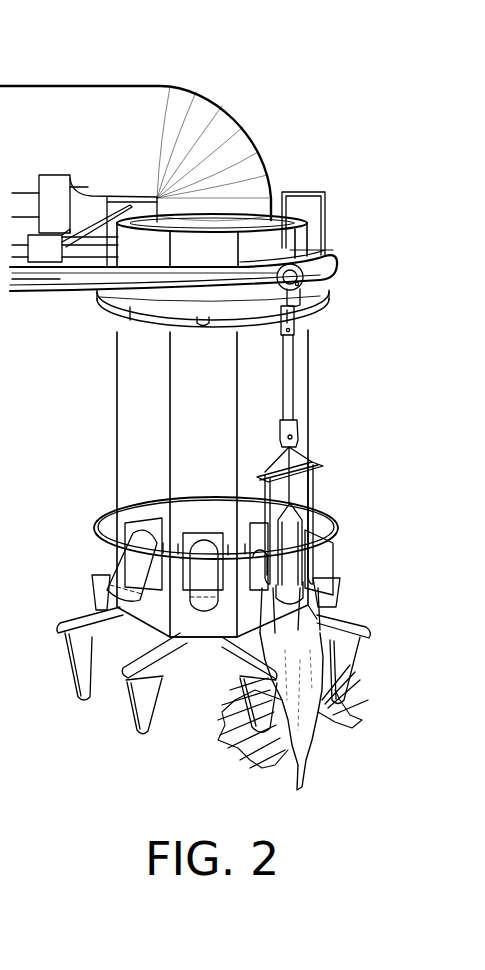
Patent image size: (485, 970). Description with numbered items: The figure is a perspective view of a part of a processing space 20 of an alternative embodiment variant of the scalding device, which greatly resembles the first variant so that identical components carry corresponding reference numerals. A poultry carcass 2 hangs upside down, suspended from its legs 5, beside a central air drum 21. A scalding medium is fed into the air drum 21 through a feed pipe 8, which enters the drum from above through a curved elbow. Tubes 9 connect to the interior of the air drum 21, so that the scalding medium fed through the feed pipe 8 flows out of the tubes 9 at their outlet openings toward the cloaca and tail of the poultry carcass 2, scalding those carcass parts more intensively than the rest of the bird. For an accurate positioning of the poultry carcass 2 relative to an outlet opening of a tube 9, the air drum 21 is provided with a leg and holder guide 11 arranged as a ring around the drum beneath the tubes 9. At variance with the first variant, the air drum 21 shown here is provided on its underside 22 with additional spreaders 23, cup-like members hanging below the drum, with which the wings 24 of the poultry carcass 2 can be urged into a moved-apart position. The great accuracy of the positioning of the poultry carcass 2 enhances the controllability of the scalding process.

The poultry carcass 2 is at (292, 700).
The legs 5 is at (325, 290).
The feed pipe 8 is at (124, 94).
The tubes 9 is at (122, 578).
The leg and holder guide 11 is at (339, 523).
The processing space 20 is at (73, 471).
The air drum 21 is at (136, 413).
The underside 22 is at (197, 642).
The spreaders 23 is at (56, 628).
The wings 24 is at (250, 763).